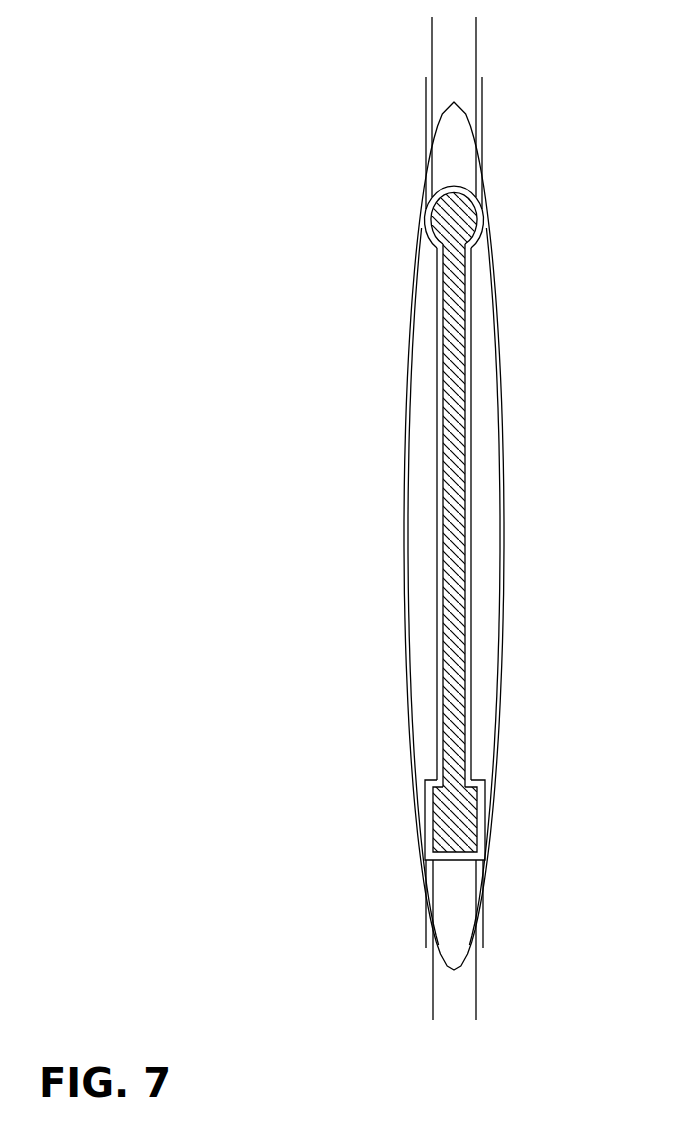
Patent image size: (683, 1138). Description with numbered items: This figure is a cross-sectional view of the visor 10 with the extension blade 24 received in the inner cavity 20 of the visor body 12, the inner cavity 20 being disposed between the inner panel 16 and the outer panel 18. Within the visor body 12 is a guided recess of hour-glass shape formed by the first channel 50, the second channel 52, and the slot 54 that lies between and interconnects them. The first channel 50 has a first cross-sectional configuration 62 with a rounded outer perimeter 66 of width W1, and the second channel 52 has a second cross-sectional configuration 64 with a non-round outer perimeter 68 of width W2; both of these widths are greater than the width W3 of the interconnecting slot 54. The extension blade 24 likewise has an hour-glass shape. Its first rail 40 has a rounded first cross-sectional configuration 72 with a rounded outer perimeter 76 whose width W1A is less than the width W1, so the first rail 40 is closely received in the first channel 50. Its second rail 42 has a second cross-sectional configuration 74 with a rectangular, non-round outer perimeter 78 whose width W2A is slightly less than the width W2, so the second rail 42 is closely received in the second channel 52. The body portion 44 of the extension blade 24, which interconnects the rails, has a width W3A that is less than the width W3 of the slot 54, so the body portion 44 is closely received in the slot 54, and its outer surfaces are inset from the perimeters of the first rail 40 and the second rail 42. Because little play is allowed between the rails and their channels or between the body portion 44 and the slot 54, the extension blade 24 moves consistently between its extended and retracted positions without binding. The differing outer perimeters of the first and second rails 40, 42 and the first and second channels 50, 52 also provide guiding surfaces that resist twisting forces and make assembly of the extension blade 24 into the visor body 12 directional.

The visor 10 is at (558, 325).
The visor body 12 is at (340, 518).
The inner panel 16 is at (405, 457).
The outer panel 18 is at (503, 472).
The inner cavity 20 is at (421, 402).
The extension blade 24 is at (467, 497).
The first rail 40 is at (468, 220).
The second rail 42 is at (458, 828).
The body portion 44 is at (467, 545).
The first channel 50 is at (435, 208).
The second channel 52 is at (432, 832).
The slot 54 is at (466, 447).
The first cross-sectional configuration 62 is at (432, 195).
The second cross-sectional configuration 64 is at (478, 877).
The rounded outer perimeter 66 is at (426, 205).
The non-round outer perimeter 68 is at (432, 788).
The rounded first cross-sectional configuration 72 is at (447, 232).
The second cross-sectional configuration 74 is at (452, 814).
The rounded outer perimeter 76 is at (482, 202).
The non-round outer perimeter 78 is at (480, 793).
The width of rounded outer perimeter of first channel W1 is at (425, 90).
The width of rounded outer perimeter of first rail W1A is at (431, 40).
The width of second channel cross-sectional configuration W2 is at (425, 930).
The width of non-round outer perimeter of second rail W2A is at (432, 984).
The width of slot W3 is at (436, 641).
The width of body portion W3A is at (436, 598).